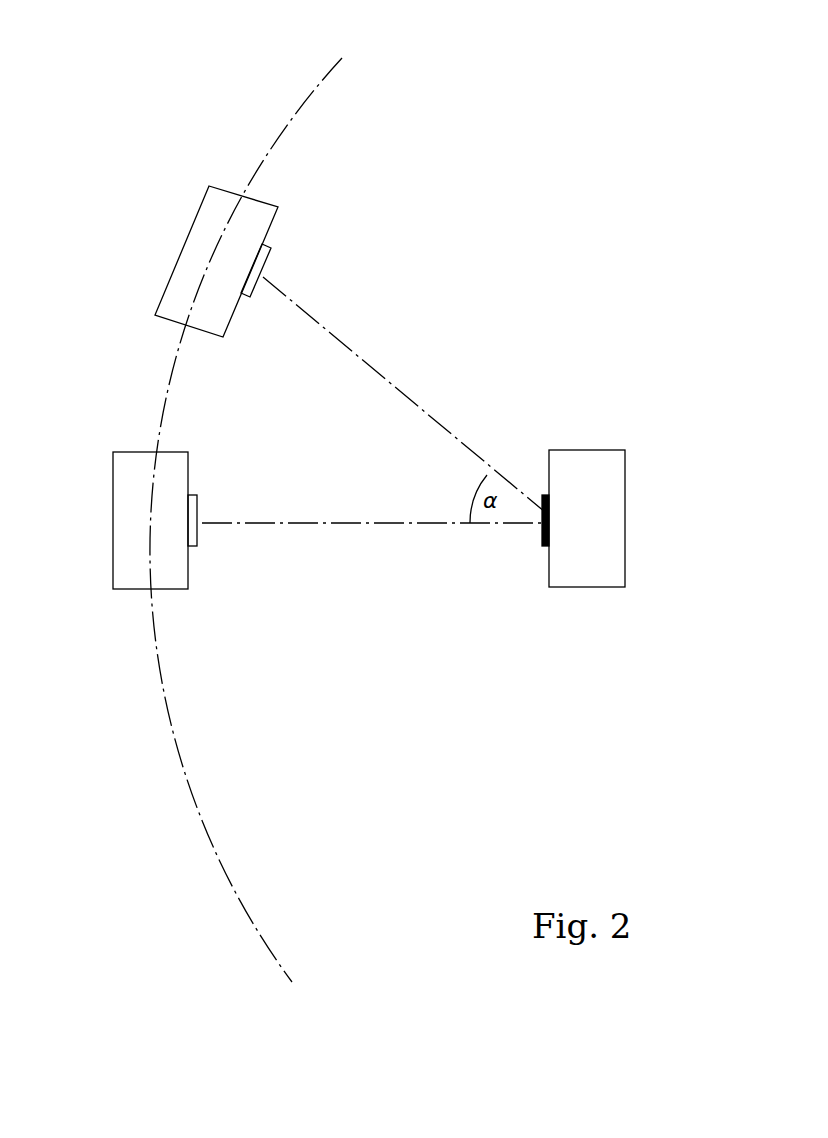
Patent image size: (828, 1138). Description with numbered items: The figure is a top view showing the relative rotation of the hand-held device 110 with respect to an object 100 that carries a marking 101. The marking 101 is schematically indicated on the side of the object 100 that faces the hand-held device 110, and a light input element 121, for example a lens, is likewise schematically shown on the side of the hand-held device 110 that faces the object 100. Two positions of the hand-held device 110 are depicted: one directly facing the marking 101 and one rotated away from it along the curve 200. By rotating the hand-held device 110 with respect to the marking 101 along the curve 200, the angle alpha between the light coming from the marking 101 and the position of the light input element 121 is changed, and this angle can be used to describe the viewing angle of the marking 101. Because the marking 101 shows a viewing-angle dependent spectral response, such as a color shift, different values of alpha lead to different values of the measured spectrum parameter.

The curve 200 is at (279, 505).
The hand-held device 110 is at (205, 200).
The light input element 121 is at (277, 262).
The object 100 is at (612, 468).
The marking 101 is at (533, 543).